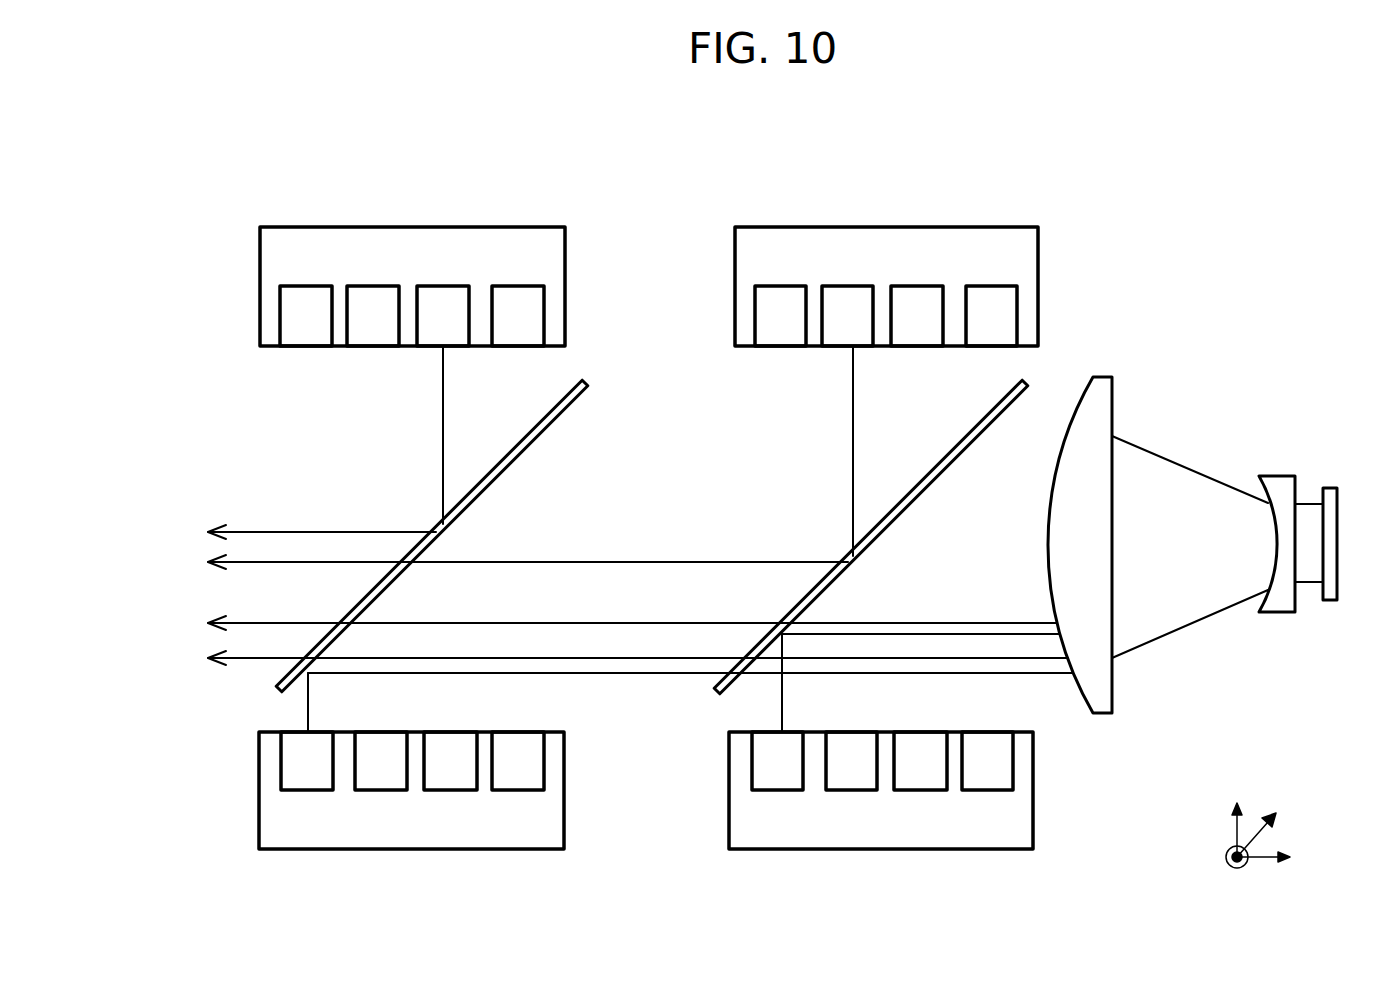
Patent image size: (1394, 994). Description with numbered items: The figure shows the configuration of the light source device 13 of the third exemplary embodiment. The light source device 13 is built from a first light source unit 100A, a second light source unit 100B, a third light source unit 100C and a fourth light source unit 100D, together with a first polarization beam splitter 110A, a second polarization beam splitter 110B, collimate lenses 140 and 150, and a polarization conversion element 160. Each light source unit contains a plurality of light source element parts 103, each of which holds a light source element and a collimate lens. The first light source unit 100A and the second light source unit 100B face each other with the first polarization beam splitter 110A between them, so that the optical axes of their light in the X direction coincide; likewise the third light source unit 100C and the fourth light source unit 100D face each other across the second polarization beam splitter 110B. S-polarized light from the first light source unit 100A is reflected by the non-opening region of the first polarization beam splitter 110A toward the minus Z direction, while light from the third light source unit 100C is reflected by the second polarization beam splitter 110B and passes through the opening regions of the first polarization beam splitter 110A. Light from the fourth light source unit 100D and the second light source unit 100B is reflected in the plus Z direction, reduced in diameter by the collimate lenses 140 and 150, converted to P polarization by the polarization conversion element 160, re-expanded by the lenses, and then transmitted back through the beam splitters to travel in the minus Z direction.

The light source device 13 is at (239, 172).
The first light source unit 100A is at (440, 227).
The second light source unit 100B is at (433, 849).
The third light source unit 100C is at (888, 227).
The fourth light source unit 100D is at (958, 849).
The light source element part 103 is at (517, 286).
The first polarization beam splitter 110A is at (587, 381).
The second polarization beam splitter 110B is at (1027, 382).
The collimate lens 140 is at (1100, 377).
The collimate lens 150 is at (1276, 476).
The polarization conversion element 160 is at (1330, 488).